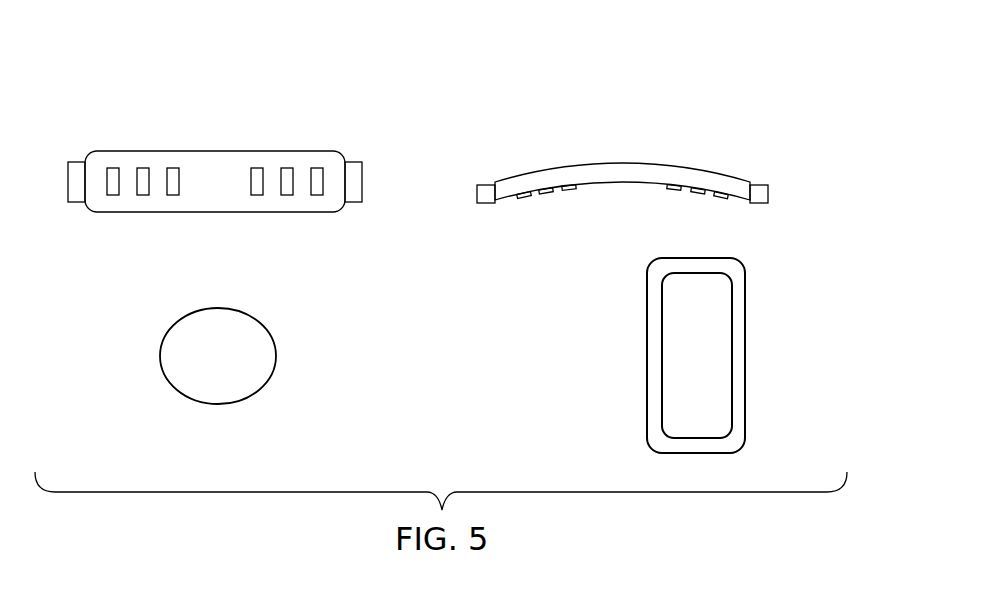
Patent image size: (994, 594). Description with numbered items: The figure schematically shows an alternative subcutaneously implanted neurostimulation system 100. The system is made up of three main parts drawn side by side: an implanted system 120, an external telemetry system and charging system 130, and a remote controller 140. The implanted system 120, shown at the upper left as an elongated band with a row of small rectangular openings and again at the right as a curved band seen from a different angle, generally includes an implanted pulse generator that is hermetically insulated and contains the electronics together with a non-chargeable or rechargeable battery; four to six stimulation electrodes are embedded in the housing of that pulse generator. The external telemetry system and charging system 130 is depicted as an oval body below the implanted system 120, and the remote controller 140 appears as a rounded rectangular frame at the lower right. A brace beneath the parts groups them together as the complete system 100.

The subcutaneously implanted neurostimulation system 100 is at (738, 57).
The implanted system 120 is at (131, 132).
The external telemetry system and charging system 130 is at (220, 307).
The remote controller 140 is at (698, 257).